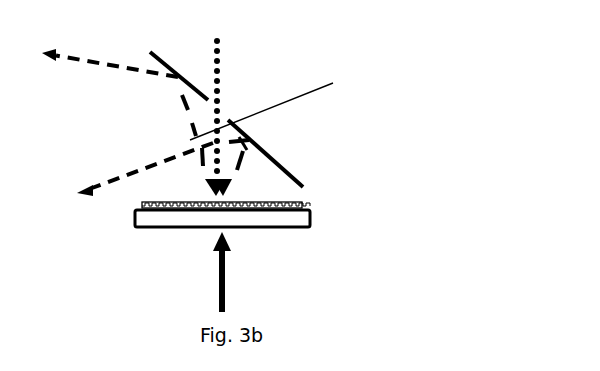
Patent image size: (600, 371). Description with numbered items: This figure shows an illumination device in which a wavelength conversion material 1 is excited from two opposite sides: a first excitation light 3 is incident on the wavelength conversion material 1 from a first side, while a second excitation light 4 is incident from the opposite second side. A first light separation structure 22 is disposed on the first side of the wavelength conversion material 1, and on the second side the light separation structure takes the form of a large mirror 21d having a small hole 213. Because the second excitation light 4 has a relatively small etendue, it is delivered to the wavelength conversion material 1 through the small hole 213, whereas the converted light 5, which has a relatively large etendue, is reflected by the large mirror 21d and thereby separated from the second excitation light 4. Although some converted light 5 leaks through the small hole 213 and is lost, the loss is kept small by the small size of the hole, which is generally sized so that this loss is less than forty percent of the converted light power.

The second excitation light 4 is at (325, 105).
The small hole 213 is at (347, 98).
The converted light 5 is at (333, 83).
The large mirror 21d is at (347, 145).
The wavelength conversion material 1 is at (291, 173).
The first light separation structure 22 is at (296, 203).
The first excitation light 3 is at (325, 272).